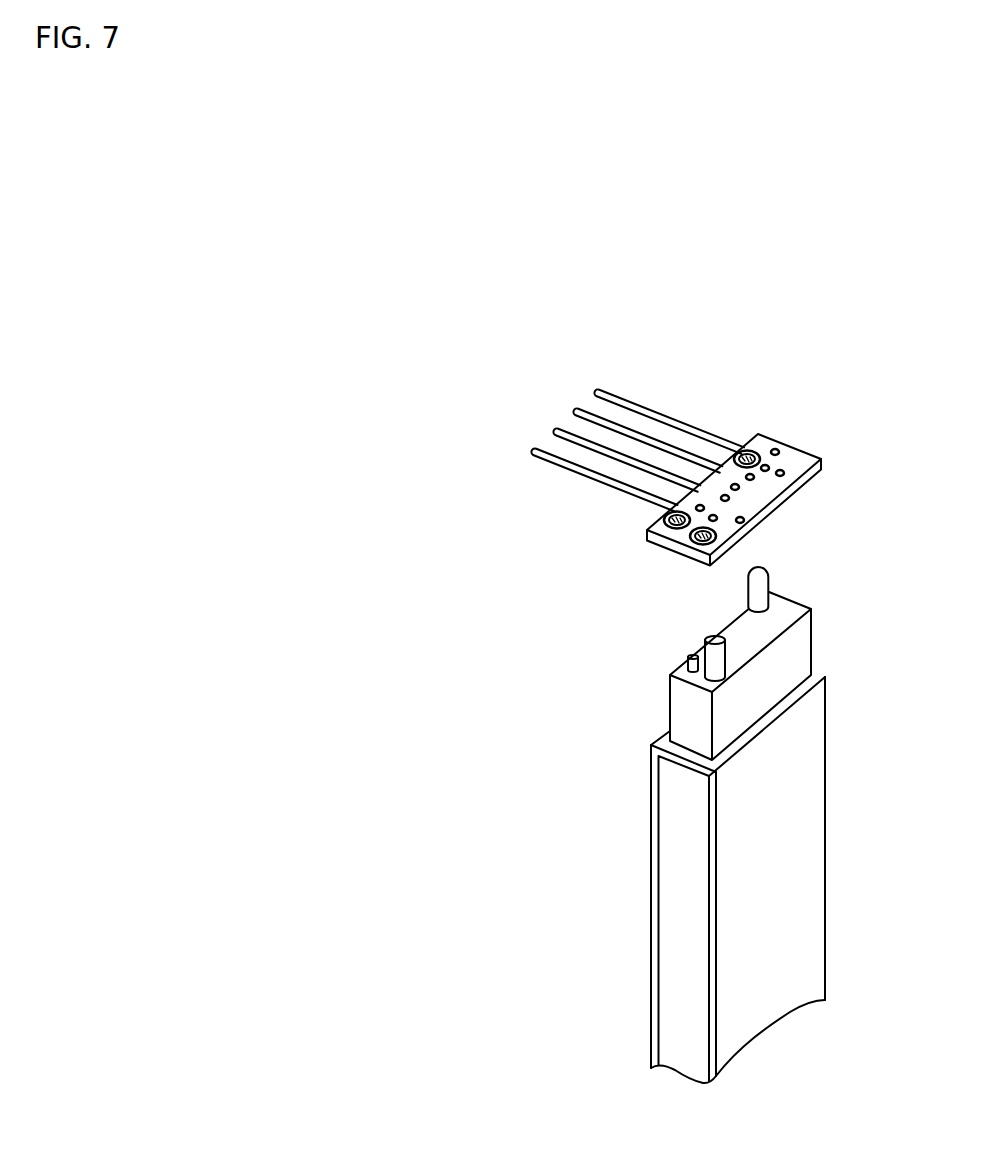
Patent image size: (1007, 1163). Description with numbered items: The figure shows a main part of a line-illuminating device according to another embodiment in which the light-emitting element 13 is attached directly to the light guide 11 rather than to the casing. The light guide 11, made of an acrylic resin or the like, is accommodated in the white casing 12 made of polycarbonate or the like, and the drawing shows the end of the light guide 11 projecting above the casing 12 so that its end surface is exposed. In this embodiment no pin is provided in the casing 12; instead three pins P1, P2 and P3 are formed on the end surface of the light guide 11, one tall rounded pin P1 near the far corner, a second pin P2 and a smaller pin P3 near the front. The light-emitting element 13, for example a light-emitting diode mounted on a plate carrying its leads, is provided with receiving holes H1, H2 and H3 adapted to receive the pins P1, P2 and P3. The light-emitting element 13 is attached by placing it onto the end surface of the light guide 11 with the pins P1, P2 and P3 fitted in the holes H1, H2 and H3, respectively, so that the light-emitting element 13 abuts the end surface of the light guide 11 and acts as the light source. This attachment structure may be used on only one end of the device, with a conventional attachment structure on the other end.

The light-emitting element 13 is at (818, 468).
The receiving hole H1 is at (748, 451).
The receiving hole H2 is at (695, 538).
The receiving hole H3 is at (665, 514).
The light guide 11 is at (683, 718).
The casing 12 is at (810, 849).
The pin P1 is at (760, 599).
The pin P2 is at (722, 658).
The pin P3 is at (688, 660).